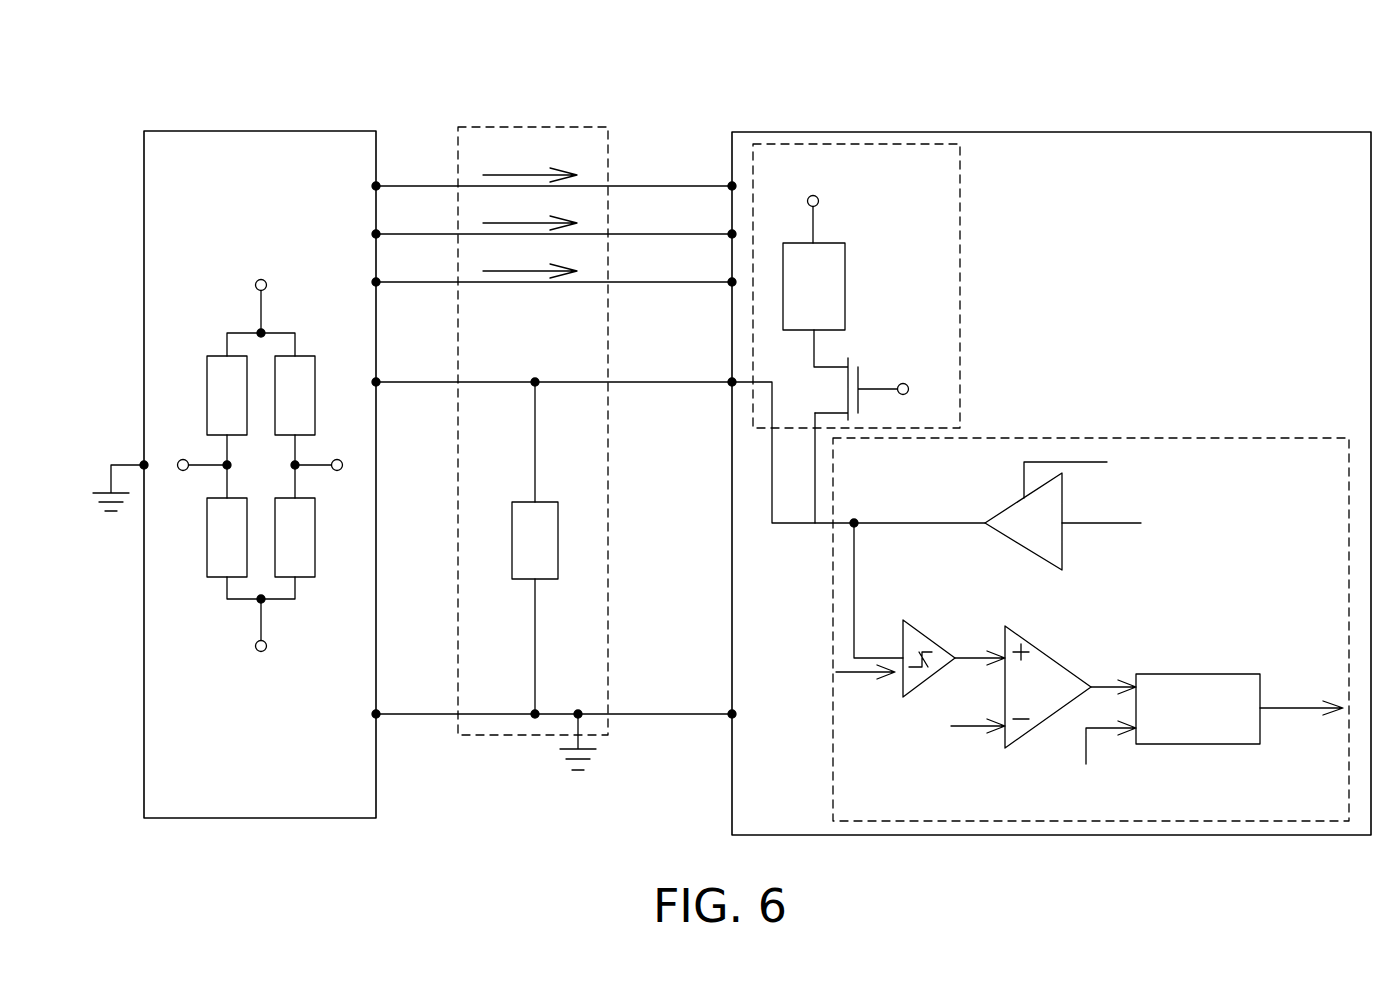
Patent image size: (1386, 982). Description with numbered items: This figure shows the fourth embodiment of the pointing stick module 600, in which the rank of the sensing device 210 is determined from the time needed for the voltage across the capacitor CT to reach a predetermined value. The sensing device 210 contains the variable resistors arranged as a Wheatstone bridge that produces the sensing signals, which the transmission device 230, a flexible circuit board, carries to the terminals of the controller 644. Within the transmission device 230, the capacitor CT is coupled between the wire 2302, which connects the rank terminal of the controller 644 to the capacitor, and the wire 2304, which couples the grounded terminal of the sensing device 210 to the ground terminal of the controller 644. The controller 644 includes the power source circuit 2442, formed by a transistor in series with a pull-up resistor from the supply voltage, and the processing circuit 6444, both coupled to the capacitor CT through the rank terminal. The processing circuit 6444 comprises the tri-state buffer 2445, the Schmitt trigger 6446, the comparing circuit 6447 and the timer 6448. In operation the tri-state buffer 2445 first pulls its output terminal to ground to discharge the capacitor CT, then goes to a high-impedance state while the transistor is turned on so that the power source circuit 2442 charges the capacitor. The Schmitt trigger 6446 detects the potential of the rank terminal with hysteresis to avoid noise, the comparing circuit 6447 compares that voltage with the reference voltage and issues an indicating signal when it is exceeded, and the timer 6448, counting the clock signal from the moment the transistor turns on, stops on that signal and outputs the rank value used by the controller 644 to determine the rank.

The pointing stick module 600 is at (1176, 97).
The sensing device 210 is at (253, 131).
The transmission device 230 is at (533, 127).
The wire 2302 is at (500, 380).
The wire 2304 is at (500, 713).
The controller 644 is at (1068, 131).
The power source circuit 2442 is at (960, 289).
The processing circuit 6444 is at (1212, 438).
The tri-state buffer 2445 is at (1027, 549).
The Schmitt trigger 6446 is at (928, 639).
The comparing circuit 6447 is at (1052, 659).
The timer 6448 is at (1161, 674).